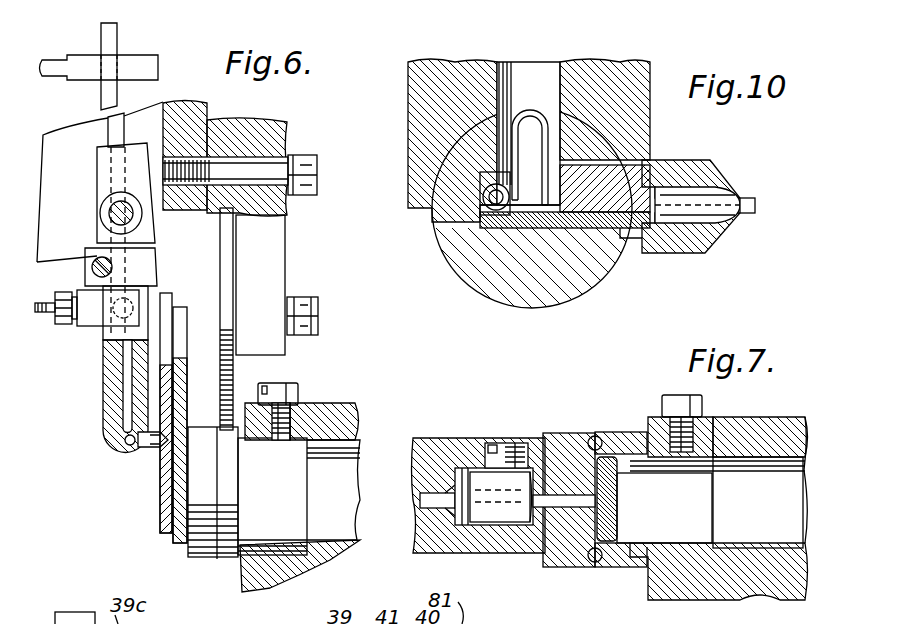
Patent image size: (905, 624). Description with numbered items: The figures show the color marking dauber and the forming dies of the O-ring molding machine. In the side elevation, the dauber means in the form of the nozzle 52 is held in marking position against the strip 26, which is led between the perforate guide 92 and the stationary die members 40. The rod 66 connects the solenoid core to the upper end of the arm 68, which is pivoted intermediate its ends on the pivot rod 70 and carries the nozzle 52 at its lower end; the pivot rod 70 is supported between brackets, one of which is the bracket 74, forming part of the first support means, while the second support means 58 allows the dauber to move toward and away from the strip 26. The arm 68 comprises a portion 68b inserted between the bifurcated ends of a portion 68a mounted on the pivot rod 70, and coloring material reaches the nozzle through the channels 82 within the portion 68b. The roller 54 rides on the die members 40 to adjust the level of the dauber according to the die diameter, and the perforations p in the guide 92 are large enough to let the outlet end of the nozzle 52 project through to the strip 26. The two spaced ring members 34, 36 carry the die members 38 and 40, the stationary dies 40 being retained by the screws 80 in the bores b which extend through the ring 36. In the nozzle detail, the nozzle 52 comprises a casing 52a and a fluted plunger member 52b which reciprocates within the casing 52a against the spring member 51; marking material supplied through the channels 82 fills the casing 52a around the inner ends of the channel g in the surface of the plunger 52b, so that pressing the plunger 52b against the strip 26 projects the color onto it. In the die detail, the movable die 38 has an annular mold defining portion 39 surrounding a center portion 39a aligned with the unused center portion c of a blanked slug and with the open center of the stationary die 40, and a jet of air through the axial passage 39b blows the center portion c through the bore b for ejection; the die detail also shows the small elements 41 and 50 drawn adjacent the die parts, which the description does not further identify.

In FIG. 6, the rod 66 is at (49, 60).
In FIG. 6, the arm 68 is at (117, 44).
In FIG. 6, the arm portion 68a is at (108, 100).
In FIG. 6, the arm portion 68b is at (103, 344).
In FIG. 10, the arm portion 68b is at (648, 130).
In FIG. 6, the arm or bracket 74 is at (62, 140).
In FIG. 6, the pivot rod 70 is at (108, 213).
In FIG. 6, the ring member 34 is at (43, 300).
In FIG. 6, the channels 82 is at (128, 395).
In FIG. 10, the channels 82 is at (547, 86).
In FIG. 6, the second support means 58 is at (100, 360).
In FIG. 6, the nozzle 52 is at (150, 458).
In FIG. 10, the nozzle 52 is at (647, 262).
In FIG. 6, the perforations p is at (163, 463).
In FIG. 6, the perforate guide 92 is at (170, 292).
In FIG. 6, the strip 26 is at (183, 320).
In FIG. 6, the roller 54 is at (228, 248).
In FIG. 6, the stationary die member 40 is at (210, 555).
In FIG. 7, the stationary die member 40 is at (630, 437).
In FIG. 6, the screw 80 is at (289, 384).
In FIG. 6, the ring member 36 is at (335, 407).
In FIG. 7, the ring member 36 is at (775, 418).
In FIG. 10, the spring member 51 is at (547, 86).
In FIG. 10, the casing 52a is at (720, 165).
In FIG. 10, the fluted plunger member 52b is at (747, 203).
In FIG. 10, the channel g is at (713, 248).
In FIG. 7, the movable die 38 is at (450, 440).
In FIG. 7, the annular mold defining portion 39 is at (577, 440).
In FIG. 7, the center portion 39a is at (580, 520).
In FIG. 7, the axial passage 39b is at (565, 500).
In FIG. 7, the ball 41 is at (600, 437).
In FIG. 7, the ball 50 is at (588, 558).
In FIG. 7, the bore b is at (707, 450).
In FIG. 7, the unused center portion c is at (618, 510).